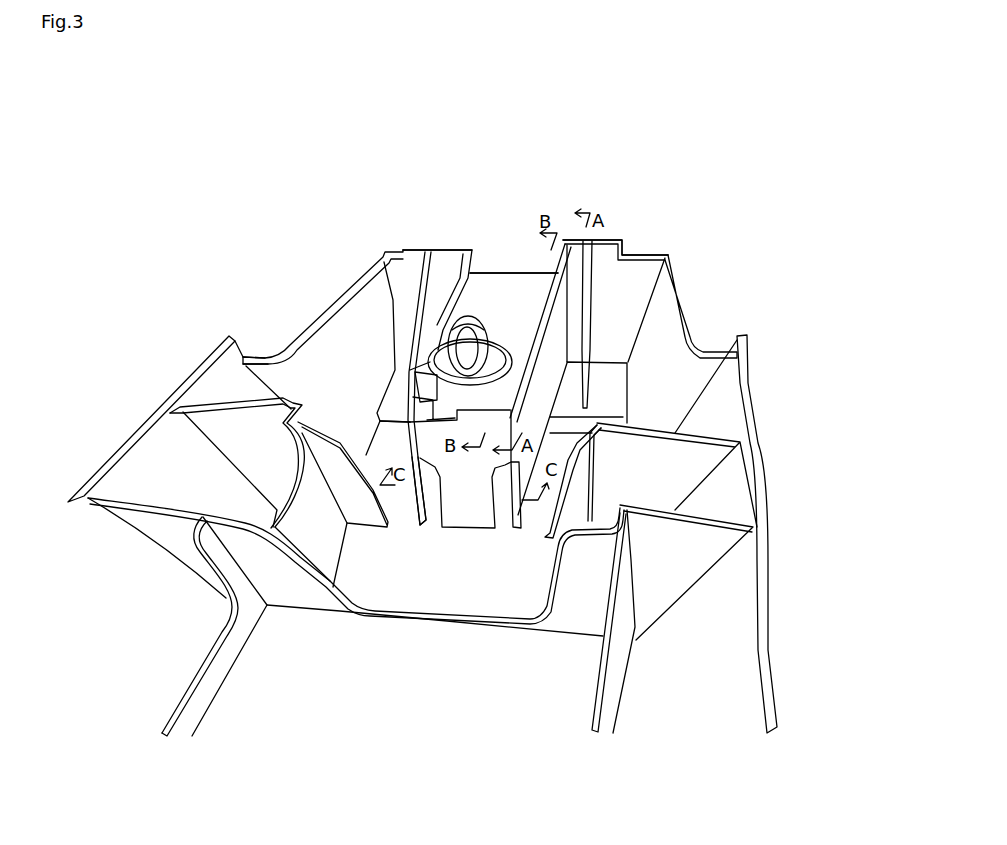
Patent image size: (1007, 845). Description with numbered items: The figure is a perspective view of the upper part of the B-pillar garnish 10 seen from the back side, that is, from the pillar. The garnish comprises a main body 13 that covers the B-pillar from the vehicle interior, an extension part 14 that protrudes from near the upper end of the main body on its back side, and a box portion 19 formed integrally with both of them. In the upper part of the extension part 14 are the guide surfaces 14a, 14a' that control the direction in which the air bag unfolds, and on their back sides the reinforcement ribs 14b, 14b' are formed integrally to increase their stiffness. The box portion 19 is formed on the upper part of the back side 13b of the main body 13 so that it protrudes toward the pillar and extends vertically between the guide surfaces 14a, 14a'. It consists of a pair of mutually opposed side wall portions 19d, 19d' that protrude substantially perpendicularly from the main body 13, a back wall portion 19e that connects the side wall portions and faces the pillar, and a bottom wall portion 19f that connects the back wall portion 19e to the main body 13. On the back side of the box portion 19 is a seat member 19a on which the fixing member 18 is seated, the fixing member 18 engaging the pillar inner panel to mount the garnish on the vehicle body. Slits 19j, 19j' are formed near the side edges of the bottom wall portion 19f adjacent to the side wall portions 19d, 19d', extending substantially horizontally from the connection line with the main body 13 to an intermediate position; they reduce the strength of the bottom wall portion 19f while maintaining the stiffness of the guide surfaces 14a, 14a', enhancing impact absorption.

The B-pillar garnish 10 is at (742, 259).
The main body 13 is at (176, 393).
The back side of main body 13b is at (380, 575).
The extension part 14 is at (423, 153).
The guide surface 14a is at (382, 325).
The guide surface 14a' is at (684, 306).
The reinforcement rib 14b is at (437, 357).
The reinforcement rib 14b' is at (589, 323).
The fixing member 18 is at (480, 325).
The box portion 19 is at (522, 237).
The seat member 19a is at (395, 393).
The side wall portion 19d is at (279, 445).
The side wall portion 19d' is at (685, 437).
The back wall portion 19e is at (480, 292).
The bottom wall portion 19f is at (468, 493).
The slit 19j is at (381, 607).
The slit 19j' is at (498, 582).